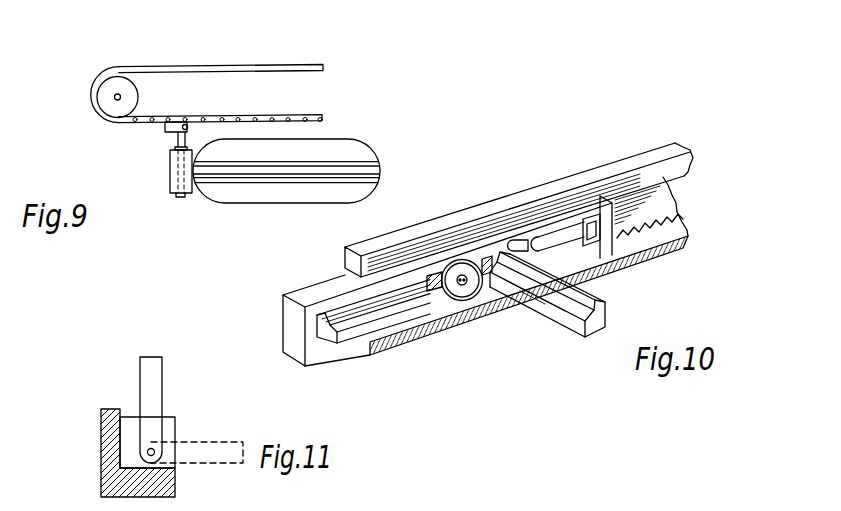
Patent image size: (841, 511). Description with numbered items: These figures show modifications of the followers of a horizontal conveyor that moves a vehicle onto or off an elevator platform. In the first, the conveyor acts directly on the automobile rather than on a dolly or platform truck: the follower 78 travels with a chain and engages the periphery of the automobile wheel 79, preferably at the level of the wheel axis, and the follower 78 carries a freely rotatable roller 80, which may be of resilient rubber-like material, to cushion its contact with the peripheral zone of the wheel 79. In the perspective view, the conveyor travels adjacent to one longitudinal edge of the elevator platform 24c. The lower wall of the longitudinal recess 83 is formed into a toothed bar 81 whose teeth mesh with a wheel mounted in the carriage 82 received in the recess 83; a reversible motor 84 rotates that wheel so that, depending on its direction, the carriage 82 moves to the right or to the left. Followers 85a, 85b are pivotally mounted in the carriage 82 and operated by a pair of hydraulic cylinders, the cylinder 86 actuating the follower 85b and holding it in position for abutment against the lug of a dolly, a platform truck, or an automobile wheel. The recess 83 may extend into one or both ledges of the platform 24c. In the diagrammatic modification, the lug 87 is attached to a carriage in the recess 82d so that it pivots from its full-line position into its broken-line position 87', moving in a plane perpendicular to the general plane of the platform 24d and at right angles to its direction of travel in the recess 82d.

In FIG. 9, the follower 78 is at (176, 137).
In FIG. 9, the wheel 79 is at (217, 192).
In FIG. 9, the freely rotatable roller 80 is at (180, 168).
In FIG. 10, the elevator platform 24c is at (622, 168).
In FIG. 10, the toothed bar 81 is at (679, 218).
In FIG. 10, the carriage 82 is at (295, 318).
In FIG. 10, the longitudinal recess 83 is at (657, 200).
In FIG. 10, the reversible motor 84 is at (468, 288).
In FIG. 10, the follower 85a is at (380, 313).
In FIG. 10, the follower 85b is at (577, 310).
In FIG. 10, the hydraulic cylinder 86 is at (573, 237).
In FIG. 11, the platform 24d is at (100, 428).
In FIG. 11, the recess 82d is at (132, 430).
In FIG. 11, the lug 87 is at (170, 410).
In FIG. 11, the broken-line position 87' is at (200, 415).